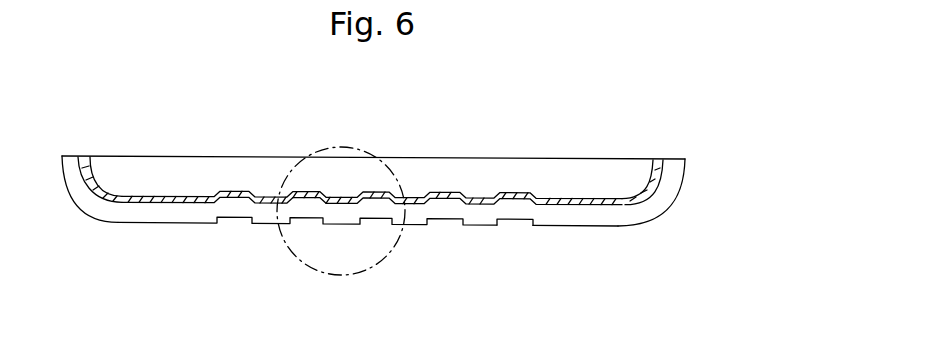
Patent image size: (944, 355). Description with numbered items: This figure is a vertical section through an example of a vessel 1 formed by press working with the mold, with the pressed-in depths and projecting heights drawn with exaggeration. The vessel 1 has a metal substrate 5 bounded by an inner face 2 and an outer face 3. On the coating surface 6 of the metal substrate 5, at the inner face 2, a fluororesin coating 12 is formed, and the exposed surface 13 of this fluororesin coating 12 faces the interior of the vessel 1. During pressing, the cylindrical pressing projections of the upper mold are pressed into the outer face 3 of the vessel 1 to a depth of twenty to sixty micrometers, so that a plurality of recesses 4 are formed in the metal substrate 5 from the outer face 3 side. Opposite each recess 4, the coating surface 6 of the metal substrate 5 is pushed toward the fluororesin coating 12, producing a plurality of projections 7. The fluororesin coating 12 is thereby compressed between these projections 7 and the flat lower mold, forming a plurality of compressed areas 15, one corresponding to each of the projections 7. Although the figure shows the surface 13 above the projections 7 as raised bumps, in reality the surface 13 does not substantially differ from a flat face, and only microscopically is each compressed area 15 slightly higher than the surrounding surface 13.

The vessel 1 is at (663, 233).
The inner face 2 is at (422, 182).
The outer face 3 is at (430, 248).
The recess 4 is at (512, 222).
The metal substrate 5 is at (564, 216).
The coating surface 6 is at (176, 200).
The projections 7 is at (455, 196).
The fluororesin coating 12 is at (648, 184).
The surface 13 is at (392, 182).
The compressed areas 15 is at (237, 197).